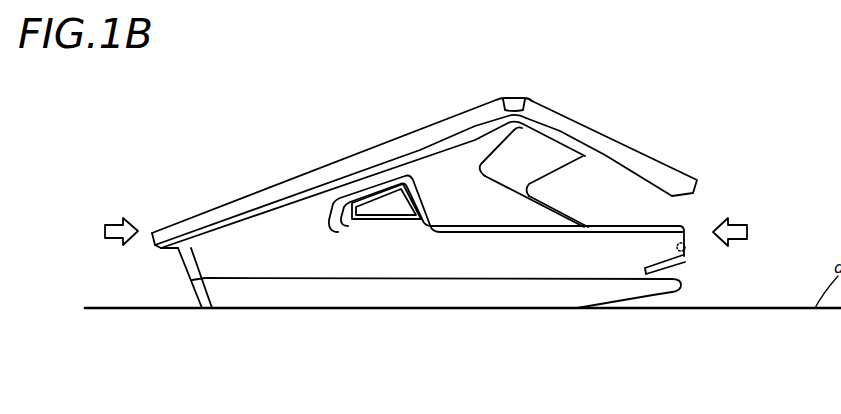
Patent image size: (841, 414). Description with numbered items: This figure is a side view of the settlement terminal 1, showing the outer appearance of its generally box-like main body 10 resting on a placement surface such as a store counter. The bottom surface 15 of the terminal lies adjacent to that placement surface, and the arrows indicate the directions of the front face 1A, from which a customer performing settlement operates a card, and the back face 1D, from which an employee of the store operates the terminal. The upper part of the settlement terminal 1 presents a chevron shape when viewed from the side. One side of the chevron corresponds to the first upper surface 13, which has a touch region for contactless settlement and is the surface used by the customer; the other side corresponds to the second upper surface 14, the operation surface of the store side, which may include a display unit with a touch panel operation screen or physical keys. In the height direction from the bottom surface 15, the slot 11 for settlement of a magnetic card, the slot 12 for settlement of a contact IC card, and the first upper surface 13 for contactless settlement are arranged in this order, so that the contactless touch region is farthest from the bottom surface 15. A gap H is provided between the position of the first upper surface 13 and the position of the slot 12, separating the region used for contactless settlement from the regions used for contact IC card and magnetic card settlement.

The settlement terminal 1 is at (619, 108).
The main body 10 is at (347, 253).
The slot for settlement of a magnetic card 11 is at (686, 258).
The slot for settlement of a contact IC card 12 is at (684, 243).
The first upper surface 13 is at (645, 152).
The second upper surface 14 is at (277, 181).
The bottom surface 15 is at (490, 309).
The gap H is at (613, 193).
The front face 1A is at (748, 232).
The back face 1D is at (102, 231).